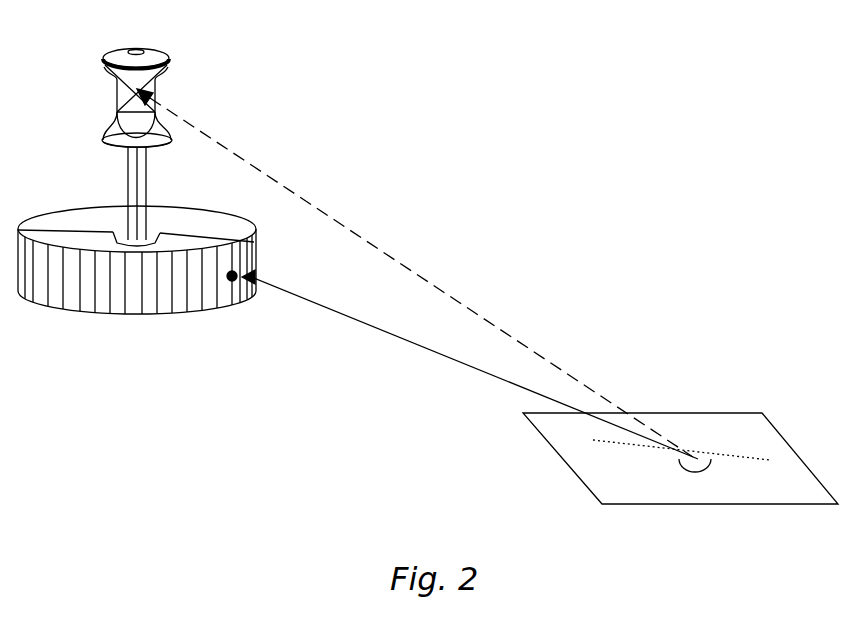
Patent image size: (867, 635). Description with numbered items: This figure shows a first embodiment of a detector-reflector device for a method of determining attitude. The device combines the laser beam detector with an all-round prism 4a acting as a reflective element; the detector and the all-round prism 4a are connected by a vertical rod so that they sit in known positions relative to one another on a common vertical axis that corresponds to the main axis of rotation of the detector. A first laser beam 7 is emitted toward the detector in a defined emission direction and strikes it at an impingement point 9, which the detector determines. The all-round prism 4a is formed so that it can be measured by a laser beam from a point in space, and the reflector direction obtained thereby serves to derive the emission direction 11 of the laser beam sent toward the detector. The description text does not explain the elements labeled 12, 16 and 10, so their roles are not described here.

The light source unit 12 is at (58, 62).
The all-round prism 4a is at (415, 272).
The shaft hub 16 is at (101, 196).
The rotating drum 10 is at (210, 245).
The impingement point 9 is at (207, 310).
The first laser beam 7 is at (476, 368).
The emission direction 11 is at (680, 412).